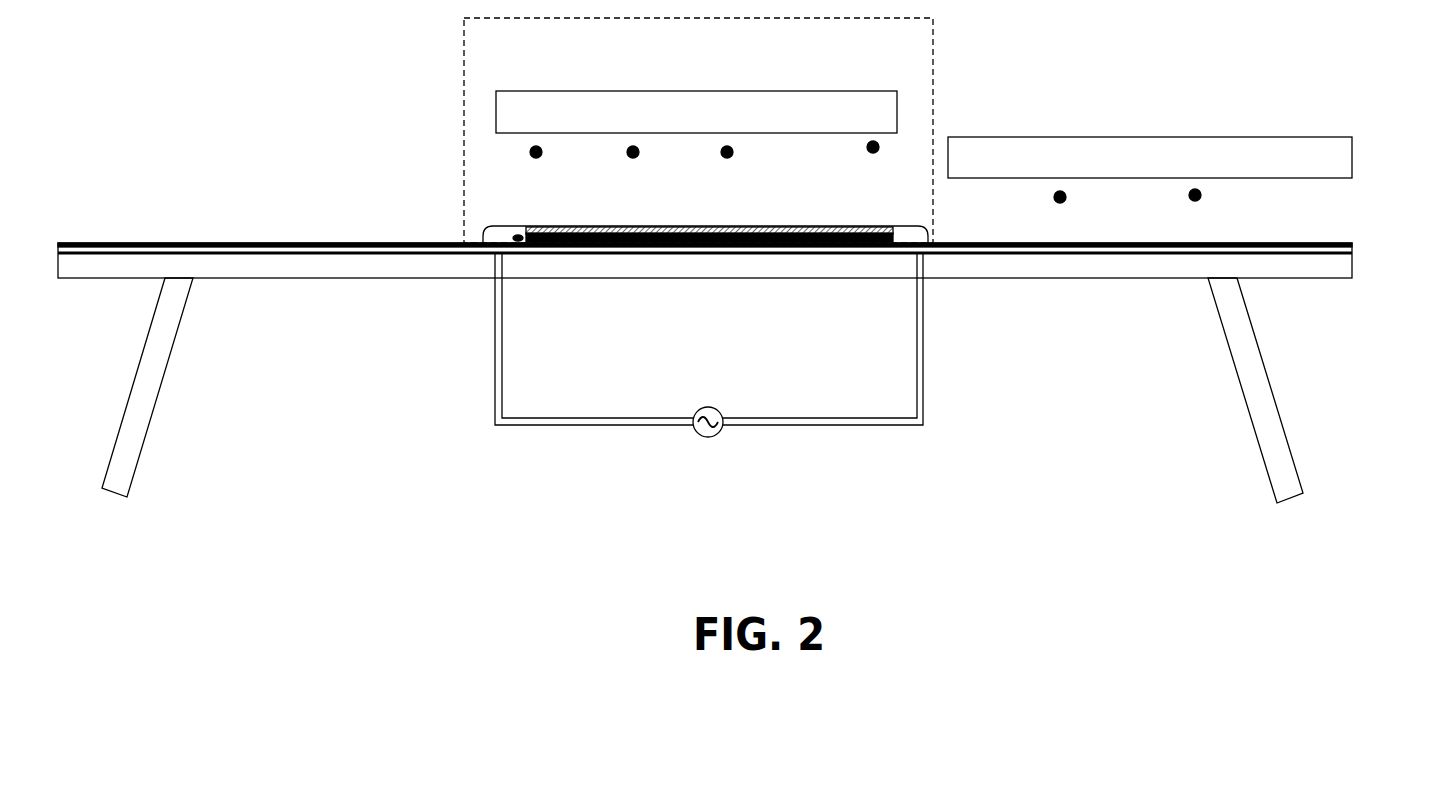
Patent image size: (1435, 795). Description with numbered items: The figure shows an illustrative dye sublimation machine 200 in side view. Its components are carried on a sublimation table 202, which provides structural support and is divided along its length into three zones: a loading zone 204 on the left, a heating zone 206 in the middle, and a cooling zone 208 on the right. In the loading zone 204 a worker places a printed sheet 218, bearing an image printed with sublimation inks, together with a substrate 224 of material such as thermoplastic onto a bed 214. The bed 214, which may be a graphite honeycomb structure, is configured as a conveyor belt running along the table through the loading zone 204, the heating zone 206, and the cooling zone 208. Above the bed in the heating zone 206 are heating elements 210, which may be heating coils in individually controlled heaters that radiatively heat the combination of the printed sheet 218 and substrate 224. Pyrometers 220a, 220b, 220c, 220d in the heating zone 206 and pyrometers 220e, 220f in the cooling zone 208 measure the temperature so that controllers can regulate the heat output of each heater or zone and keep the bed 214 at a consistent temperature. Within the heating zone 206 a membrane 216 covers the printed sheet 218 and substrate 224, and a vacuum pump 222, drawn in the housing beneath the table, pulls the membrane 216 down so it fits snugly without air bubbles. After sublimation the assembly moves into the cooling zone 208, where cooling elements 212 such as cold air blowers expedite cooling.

The dye sublimation machine 200 is at (785, 595).
The sublimation table 202 is at (1353, 263).
The loading zone 204 is at (330, 127).
The heating zone 206 is at (718, 85).
The cooling zone 208 is at (1138, 116).
The heating elements 210 is at (823, 127).
The cooling elements 212 is at (1278, 172).
The bed 214 is at (1262, 243).
The membrane 216 is at (505, 223).
The printed sheet 218 is at (568, 238).
The pyrometer 220a is at (550, 227).
The pyrometer 220b is at (665, 227).
The pyrometer 220c is at (705, 227).
The pyrometer 220d is at (783, 227).
The pyrometer 220e is at (1015, 238).
The pyrometer 220f is at (1257, 216).
The vacuum pump 222 is at (713, 405).
The substrate 224 is at (513, 237).